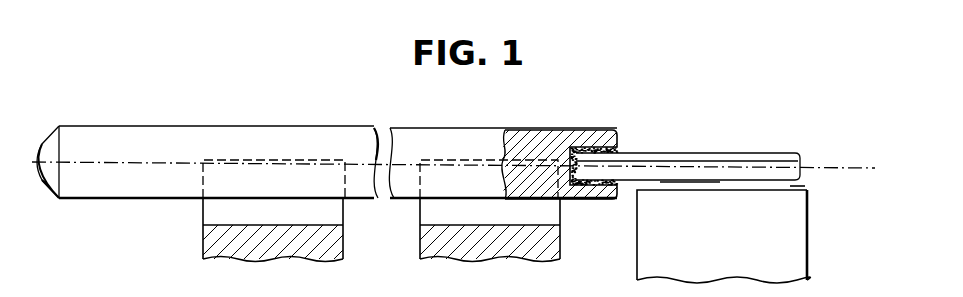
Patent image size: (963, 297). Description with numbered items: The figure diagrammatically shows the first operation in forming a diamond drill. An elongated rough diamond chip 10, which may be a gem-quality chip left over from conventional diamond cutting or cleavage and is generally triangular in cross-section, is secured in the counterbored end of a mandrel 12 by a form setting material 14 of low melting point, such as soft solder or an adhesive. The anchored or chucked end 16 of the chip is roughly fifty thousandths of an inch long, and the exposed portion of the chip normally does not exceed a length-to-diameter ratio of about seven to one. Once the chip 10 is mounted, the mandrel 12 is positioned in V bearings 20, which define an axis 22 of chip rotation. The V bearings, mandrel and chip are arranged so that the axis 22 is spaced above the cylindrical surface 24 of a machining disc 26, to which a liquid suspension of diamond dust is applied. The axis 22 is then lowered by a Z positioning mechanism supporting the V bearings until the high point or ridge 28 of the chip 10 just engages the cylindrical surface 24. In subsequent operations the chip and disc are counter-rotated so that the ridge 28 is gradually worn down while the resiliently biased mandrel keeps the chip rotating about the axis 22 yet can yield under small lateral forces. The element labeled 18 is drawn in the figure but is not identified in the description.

The rough diamond chip 10 is at (684, 144).
The mandrel 12 is at (317, 126).
The form setting material 14 is at (576, 148).
The anchored end 16 is at (600, 181).
The optical fiber 18 is at (737, 170).
The V bearings 20 is at (212, 226).
The axis 22 is at (822, 168).
The cylindrical surface 24 is at (800, 188).
The machining disc 26 is at (807, 248).
The ridge 28 is at (681, 183).